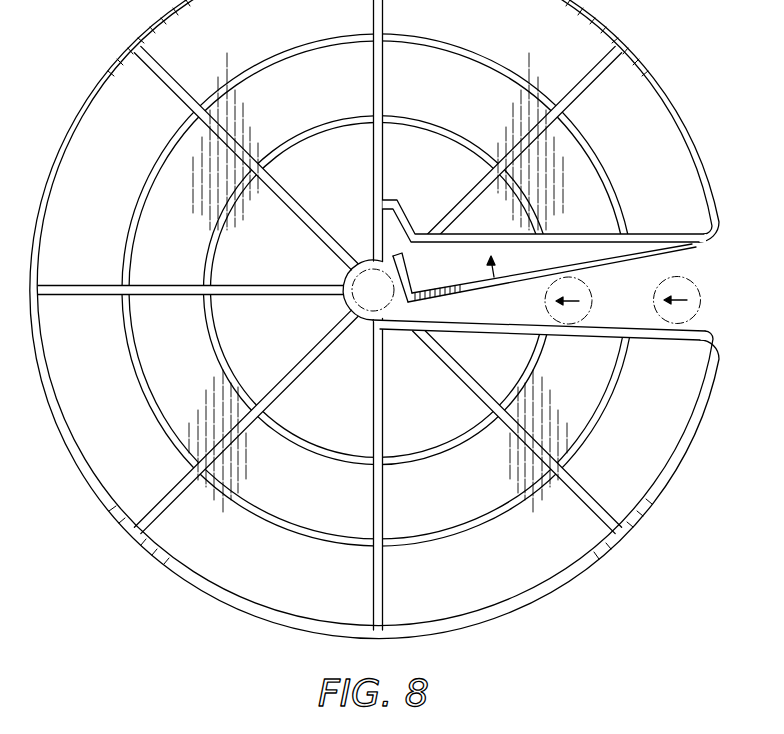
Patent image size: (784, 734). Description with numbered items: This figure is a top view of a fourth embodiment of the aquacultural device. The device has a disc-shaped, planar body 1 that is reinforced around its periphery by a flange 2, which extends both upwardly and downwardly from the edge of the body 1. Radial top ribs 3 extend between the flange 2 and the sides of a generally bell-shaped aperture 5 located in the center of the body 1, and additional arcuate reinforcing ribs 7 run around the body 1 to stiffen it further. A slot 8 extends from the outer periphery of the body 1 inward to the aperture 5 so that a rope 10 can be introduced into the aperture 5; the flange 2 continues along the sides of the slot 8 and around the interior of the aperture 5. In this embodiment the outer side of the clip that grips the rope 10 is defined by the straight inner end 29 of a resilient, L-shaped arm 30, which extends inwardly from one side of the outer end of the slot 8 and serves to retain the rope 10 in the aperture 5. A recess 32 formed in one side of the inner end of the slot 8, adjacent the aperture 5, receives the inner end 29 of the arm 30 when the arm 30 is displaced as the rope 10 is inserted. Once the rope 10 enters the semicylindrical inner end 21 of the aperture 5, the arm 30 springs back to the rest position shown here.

The body 1 is at (374, 333).
The flange 2 is at (253, 614).
The top ribs 3 is at (372, 148).
The aperture 5 is at (375, 303).
The arcuate reinforcing ribs 7 is at (300, 53).
The slot 8 is at (600, 327).
The rope 10 is at (700, 297).
The semicylindrical inner end 21 is at (365, 260).
The inner end 29 is at (410, 270).
The arm 30 is at (540, 270).
The recess 32 is at (388, 203).